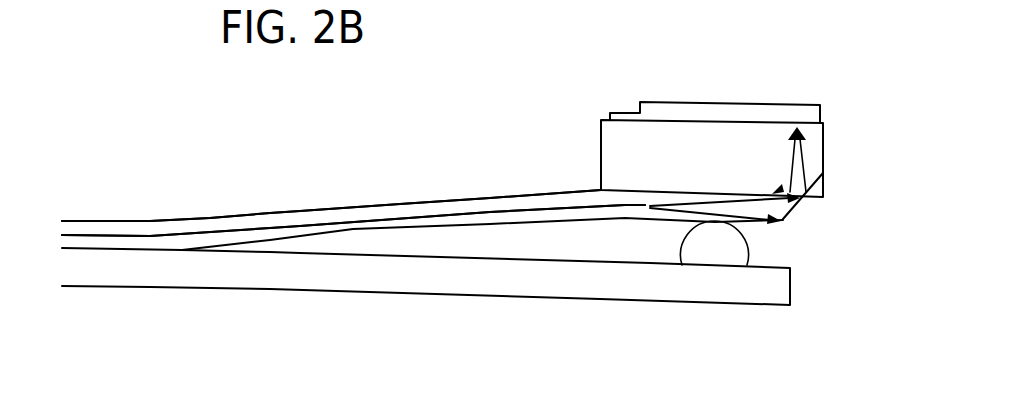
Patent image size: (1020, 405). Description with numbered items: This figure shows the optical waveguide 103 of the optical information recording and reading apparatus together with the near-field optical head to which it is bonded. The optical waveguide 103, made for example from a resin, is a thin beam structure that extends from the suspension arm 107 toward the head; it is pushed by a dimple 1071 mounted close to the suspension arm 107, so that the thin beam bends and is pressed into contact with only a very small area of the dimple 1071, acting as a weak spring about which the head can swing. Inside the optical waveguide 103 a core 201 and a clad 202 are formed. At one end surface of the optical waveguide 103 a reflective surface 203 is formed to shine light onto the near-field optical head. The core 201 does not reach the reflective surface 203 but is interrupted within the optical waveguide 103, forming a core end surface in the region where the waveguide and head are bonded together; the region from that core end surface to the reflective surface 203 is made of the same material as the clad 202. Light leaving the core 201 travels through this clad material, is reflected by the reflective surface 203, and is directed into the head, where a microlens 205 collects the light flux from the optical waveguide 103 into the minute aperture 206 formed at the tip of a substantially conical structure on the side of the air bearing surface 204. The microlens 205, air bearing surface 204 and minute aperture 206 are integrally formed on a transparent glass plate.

The optical waveguide 103 is at (422, 184).
The suspension arm 107 is at (432, 302).
The dimple 1071 is at (687, 288).
The core 201 is at (353, 192).
The clad 202 is at (353, 194).
The reflective surface 203 is at (824, 225).
The air bearing surface 204 is at (708, 118).
The microlens 205 is at (764, 173).
The minute aperture 206 is at (778, 116).